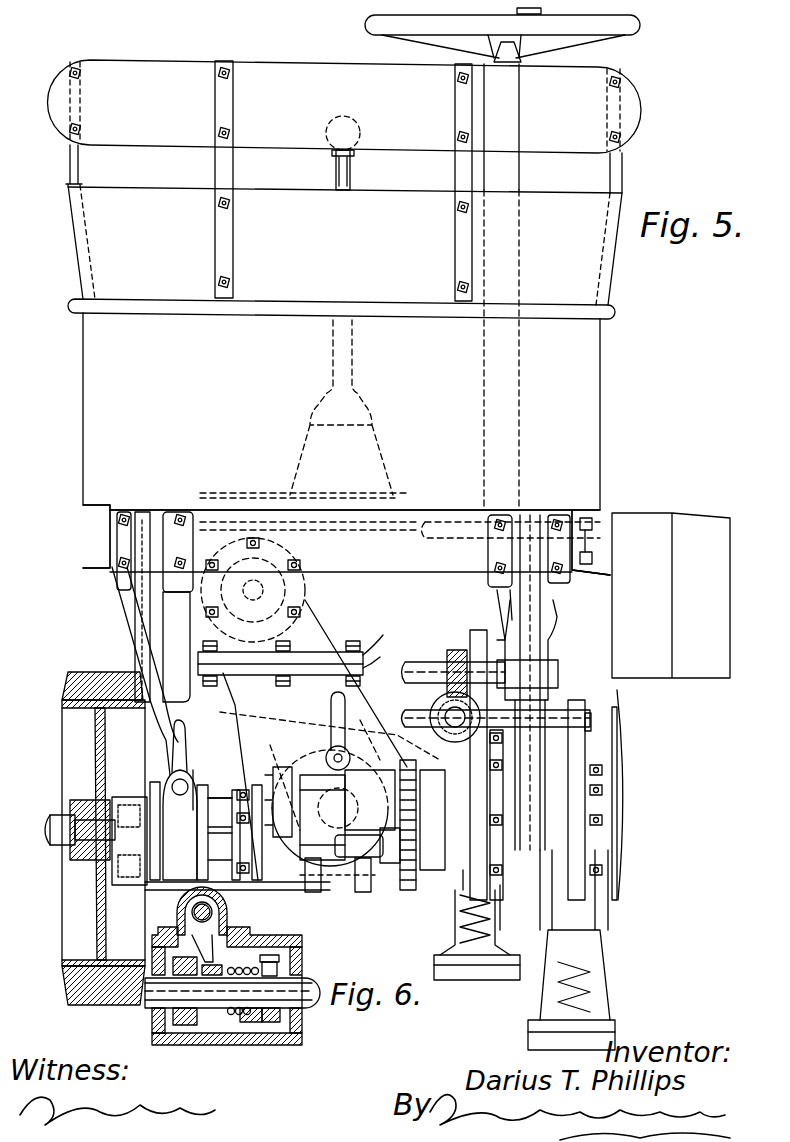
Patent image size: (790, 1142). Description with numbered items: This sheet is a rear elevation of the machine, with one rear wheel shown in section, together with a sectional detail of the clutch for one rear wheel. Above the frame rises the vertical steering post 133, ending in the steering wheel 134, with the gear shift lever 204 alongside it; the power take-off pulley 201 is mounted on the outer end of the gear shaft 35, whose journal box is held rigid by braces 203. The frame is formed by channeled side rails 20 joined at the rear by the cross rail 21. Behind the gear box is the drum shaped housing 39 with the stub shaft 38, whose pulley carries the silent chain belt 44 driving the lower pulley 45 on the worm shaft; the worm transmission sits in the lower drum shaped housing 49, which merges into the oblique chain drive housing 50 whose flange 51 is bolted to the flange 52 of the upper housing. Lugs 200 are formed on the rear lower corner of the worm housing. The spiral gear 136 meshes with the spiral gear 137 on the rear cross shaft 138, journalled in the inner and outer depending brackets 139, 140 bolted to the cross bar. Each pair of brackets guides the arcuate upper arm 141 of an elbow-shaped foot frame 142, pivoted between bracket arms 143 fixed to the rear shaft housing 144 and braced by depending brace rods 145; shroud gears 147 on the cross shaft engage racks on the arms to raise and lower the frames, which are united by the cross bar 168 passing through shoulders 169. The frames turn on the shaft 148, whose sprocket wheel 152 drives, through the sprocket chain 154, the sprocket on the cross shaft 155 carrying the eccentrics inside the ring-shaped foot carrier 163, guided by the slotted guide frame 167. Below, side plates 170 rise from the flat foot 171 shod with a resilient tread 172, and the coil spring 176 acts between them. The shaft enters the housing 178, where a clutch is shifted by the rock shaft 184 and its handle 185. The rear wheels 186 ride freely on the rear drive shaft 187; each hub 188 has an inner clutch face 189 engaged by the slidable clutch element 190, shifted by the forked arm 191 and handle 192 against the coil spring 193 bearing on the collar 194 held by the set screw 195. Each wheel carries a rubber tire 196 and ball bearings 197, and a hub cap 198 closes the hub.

In FIG. 5, the channeled side rails 20 is at (108, 528).
In FIG. 5, the cross rail 21 is at (341, 540).
In FIG. 5, the gear shaft 35 is at (610, 585).
In FIG. 5, the stub shaft 38 is at (290, 560).
In FIG. 5, the drum shaped housing 39 is at (265, 590).
In FIG. 5, the silent chain belt 44 is at (325, 642).
In FIG. 5, the lower pulley 45 is at (200, 632).
In FIG. 5, the drum shaped housing 49 is at (305, 878).
In FIG. 5, the chain drive housing 50 is at (330, 740).
In FIG. 5, the flange 51 is at (386, 652).
In FIG. 5, the flange 52 is at (386, 633).
In FIG. 5, the steering post 133 is at (519, 178).
In FIG. 5, the steering wheel 134 is at (623, 34).
In FIG. 5, the spiral gear 136 is at (448, 738).
In FIG. 5, the spiral gear 137 is at (490, 612).
In FIG. 5, the rear cross shaft 138 is at (400, 688).
In FIG. 5, the inner depending bracket 139 is at (185, 540).
In FIG. 5, the outer depending bracket 140 is at (122, 545).
In FIG. 5, the upper arm 141 is at (525, 600).
In FIG. 5, the foot frame 142 is at (590, 790).
In FIG. 5, the bracket arms 143 is at (195, 790).
In FIG. 5, the rear shaft housing 144 is at (222, 830).
In FIG. 6, the rear shaft housing 144 is at (252, 1030).
In FIG. 5, the brace rods 145 is at (130, 640).
In FIG. 5, the shroud gears 147 is at (550, 655).
In FIG. 5, the shaft 148 is at (463, 793).
In FIG. 5, the sprocket wheel 152 is at (435, 775).
In FIG. 5, the sprocket chain 154 is at (395, 812).
In FIG. 5, the cross shaft 155 is at (440, 870).
In FIG. 5, the foot carrier 163 is at (600, 870).
In FIG. 5, the guide frame 167 is at (458, 650).
In FIG. 5, the cross bar 168 is at (420, 705).
In FIG. 5, the shoulders 169 is at (560, 720).
In FIG. 5, the side plates 170 is at (590, 925).
In FIG. 5, the foot 171 is at (612, 1005).
In FIG. 5, the tread 172 is at (480, 1012).
In FIG. 5, the coil spring 176 is at (480, 940).
In FIG. 5, the housing 178 is at (302, 802).
In FIG. 5, the rock shaft 184 is at (335, 773).
In FIG. 5, the handle 185 is at (332, 745).
In FIG. 5, the rear wheels 186 is at (65, 762).
In FIG. 5, the rear drive shaft 187 is at (75, 868).
In FIG. 6, the rear drive shaft 187 is at (290, 985).
In FIG. 5, the hub 188 is at (122, 812).
In FIG. 6, the inner clutch face 189 is at (168, 975).
In FIG. 6, the clutch element 190 is at (165, 1038).
In FIG. 6, the forked arm 191 is at (222, 922).
In FIG. 5, the handle 192 is at (185, 740).
In FIG. 6, the handle 192 is at (222, 908).
In FIG. 6, the coil spring 193 is at (235, 1020).
In FIG. 6, the collar 194 is at (278, 1025).
In FIG. 6, the set screw 195 is at (272, 955).
In FIG. 5, the rubber tire 196 is at (65, 990).
In FIG. 5, the ball bearings 197 is at (80, 890).
In FIG. 5, the hub cap 198 is at (62, 830).
In FIG. 5, the lugs 200 is at (455, 895).
In FIG. 5, the power take-off pulley 201 is at (671, 595).
In FIG. 5, the braces 203 is at (600, 545).
In FIG. 5, the gear shift lever 204 is at (350, 175).